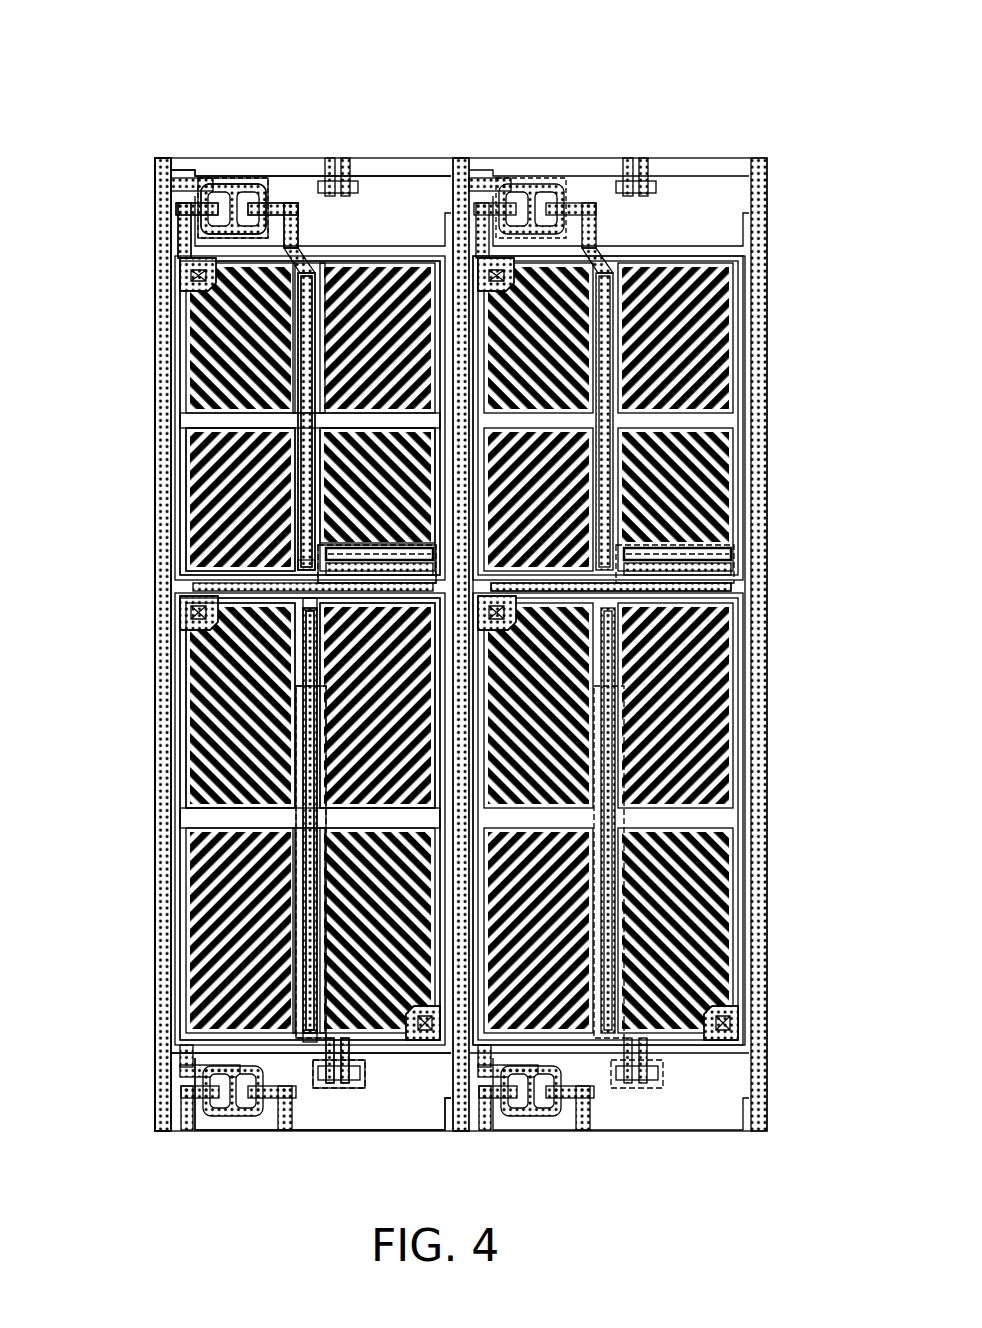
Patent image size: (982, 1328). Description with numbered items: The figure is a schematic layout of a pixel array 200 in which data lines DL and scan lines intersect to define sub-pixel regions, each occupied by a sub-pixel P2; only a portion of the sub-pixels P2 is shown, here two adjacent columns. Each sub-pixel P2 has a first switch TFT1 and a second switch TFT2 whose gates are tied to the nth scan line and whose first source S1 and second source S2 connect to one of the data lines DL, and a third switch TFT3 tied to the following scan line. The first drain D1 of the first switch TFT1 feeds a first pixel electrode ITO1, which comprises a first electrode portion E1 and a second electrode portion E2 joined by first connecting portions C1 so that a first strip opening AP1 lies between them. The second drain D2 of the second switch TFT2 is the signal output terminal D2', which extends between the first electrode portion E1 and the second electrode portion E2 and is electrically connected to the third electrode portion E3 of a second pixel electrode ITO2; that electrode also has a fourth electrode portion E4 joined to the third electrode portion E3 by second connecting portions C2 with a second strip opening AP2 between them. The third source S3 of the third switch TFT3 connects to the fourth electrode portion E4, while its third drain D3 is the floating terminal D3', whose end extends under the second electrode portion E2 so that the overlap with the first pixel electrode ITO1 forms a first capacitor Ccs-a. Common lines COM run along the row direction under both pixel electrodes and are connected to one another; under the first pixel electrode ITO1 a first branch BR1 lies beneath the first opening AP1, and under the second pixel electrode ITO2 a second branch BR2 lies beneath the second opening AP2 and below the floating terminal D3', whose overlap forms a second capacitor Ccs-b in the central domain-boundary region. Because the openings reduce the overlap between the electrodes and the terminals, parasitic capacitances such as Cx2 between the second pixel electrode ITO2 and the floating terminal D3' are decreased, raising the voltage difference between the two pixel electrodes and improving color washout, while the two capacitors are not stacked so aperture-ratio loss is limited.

The data lines DL is at (362, 58).
The first switch TFT1 is at (208, 167).
The first source S1 is at (215, 182).
The second switch TFT2 is at (245, 177).
The second source S2 is at (250, 183).
The second drain D2 is at (334, 184).
The first drain D1 is at (173, 220).
The first branch BR1 is at (292, 298).
The signal output terminal D2' is at (210, 421).
The first opening AP1 is at (290, 368).
The common lines COM is at (188, 413).
The first electrode portion E1 is at (190, 460).
The second electrode portion E2 is at (325, 480).
The first connecting portions C1 is at (280, 557).
The first pixel electrode ITO1 is at (95, 450).
The first capacitor Ccs-a is at (310, 573).
The second connecting portions C2 is at (292, 590).
The third electrode portion E3 is at (213, 668).
The fourth electrode portion E4 is at (333, 752).
The second pixel electrode ITO2 is at (95, 645).
The second capacitor Ccs-b is at (280, 866).
The second branch BR2 is at (292, 945).
The floating terminal D3' is at (211, 820).
The second opening AP2 is at (297, 995).
The third drain D3 is at (334, 1104).
The third source S3 is at (340, 1078).
The third switch TFT3 is at (358, 1080).
The sub-pixels P2 is at (770, 385).
The parasitic capacitance Cx2 is at (605, 580).
The pixel array 200 is at (814, 1180).